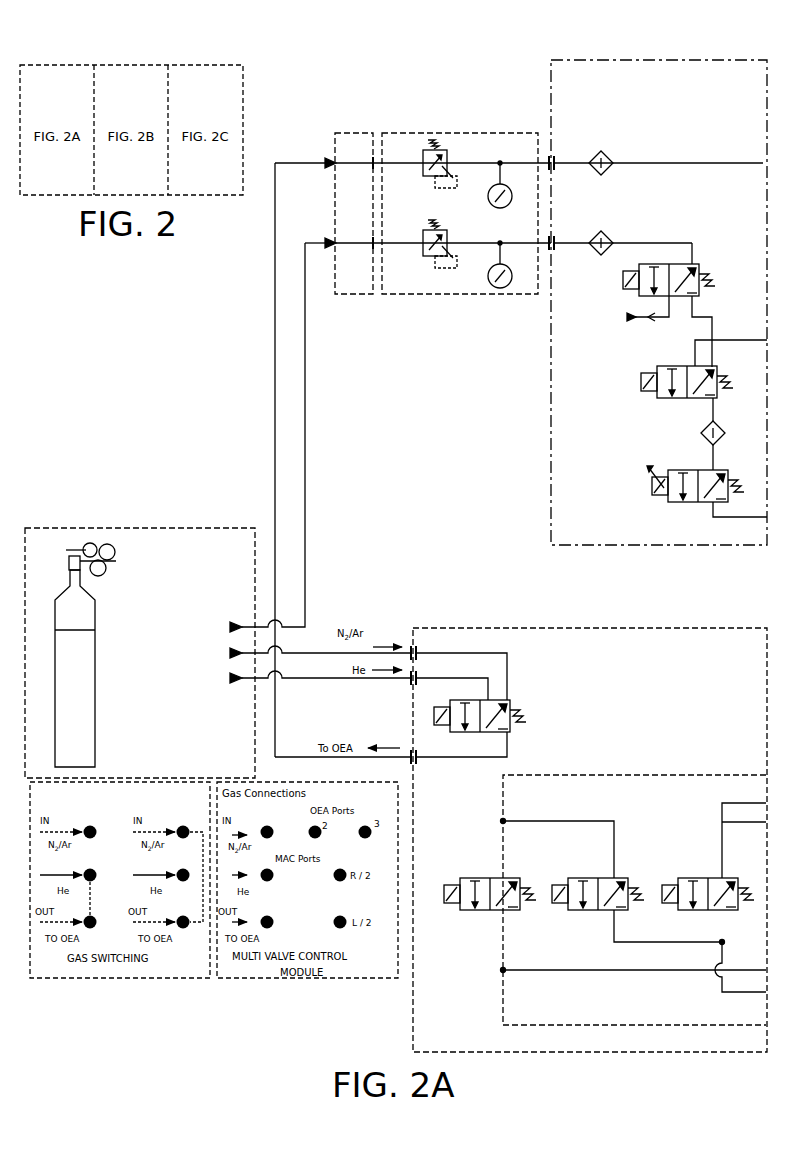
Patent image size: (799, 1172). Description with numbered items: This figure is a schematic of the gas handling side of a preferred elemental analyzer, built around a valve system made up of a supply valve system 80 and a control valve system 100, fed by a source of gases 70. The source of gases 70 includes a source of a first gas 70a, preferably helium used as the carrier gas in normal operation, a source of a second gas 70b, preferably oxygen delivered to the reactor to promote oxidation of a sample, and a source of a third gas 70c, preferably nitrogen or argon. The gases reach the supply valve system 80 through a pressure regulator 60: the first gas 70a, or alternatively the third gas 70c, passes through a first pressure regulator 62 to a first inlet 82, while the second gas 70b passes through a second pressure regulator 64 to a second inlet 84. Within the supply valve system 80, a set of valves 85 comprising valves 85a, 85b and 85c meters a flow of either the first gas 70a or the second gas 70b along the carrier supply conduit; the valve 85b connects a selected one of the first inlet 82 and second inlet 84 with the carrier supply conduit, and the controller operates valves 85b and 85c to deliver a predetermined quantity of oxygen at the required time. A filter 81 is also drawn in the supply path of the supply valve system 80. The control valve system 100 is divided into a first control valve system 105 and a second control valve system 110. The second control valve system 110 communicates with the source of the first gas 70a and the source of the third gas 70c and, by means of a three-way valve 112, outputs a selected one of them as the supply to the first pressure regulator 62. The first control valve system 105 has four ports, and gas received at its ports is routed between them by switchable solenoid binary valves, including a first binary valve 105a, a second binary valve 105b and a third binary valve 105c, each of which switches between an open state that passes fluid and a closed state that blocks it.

The pressure regulator 60 is at (443, 215).
The first pressure regulator 62 is at (478, 160).
The second pressure regulator 64 is at (478, 241).
The source of gases 70 is at (155, 528).
The source of a first gas 70a is at (205, 690).
The source of a second gas 70b is at (204, 620).
The source of a third gas 70c is at (142, 645).
The supply valve system 80 is at (637, 60).
The filter 81 is at (721, 432).
The first inlet 82 is at (556, 160).
The second inlet 84 is at (556, 240).
The set of valves 85 is at (708, 236).
The valve 85a is at (694, 262).
The valve 85b is at (695, 366).
The valve 85c is at (700, 503).
The control valve system 100 is at (497, 628).
The first control valve system 105 is at (709, 770).
The first binary valve 105a is at (452, 884).
The second binary valve 105b is at (553, 904).
The third binary valve 105c is at (672, 884).
The second control valve system 110 is at (520, 670).
The three-way valve 112 is at (513, 706).